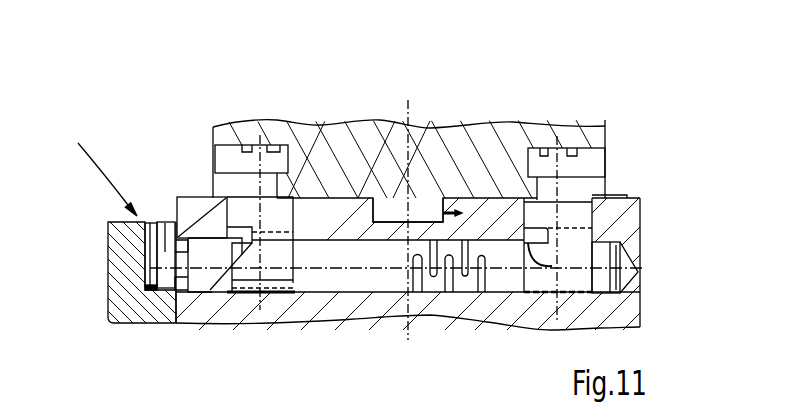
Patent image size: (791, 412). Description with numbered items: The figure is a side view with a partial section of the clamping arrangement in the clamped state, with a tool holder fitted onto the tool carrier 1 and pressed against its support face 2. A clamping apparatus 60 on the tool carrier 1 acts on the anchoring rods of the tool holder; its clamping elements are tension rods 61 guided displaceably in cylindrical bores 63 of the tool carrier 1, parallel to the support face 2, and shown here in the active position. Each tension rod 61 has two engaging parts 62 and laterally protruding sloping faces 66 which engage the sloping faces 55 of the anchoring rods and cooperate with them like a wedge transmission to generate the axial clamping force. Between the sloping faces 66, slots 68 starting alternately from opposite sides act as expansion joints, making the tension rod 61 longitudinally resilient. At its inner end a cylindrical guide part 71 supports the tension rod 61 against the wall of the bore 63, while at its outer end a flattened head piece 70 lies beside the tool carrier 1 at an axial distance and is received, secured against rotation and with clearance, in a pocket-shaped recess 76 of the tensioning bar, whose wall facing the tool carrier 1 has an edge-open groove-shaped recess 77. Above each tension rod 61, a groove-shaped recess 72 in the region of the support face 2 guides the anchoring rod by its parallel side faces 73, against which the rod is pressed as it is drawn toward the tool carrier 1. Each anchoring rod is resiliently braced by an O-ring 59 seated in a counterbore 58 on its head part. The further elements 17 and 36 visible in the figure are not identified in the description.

The tool carrier 1 is at (628, 313).
The support face 2 is at (402, 155).
The channel 17 is at (428, 212).
The marking 36 is at (527, 200).
The sloping faces 55 is at (305, 282).
The counterbore 58 is at (284, 158).
The O-ring 59 is at (245, 147).
The clamping apparatus 60 is at (94, 168).
The tension rods 61 is at (357, 280).
The engaging parts 62 is at (204, 272).
The cylindrical bores 63 is at (620, 262).
The sloping faces 66 is at (222, 284).
The slots 68 is at (472, 292).
The head piece 70 is at (150, 241).
The cylindrical guide part 71 is at (640, 273).
The groove-shaped recesses 72 is at (593, 219).
The side faces 73 is at (218, 215).
The pocket-shaped recesses 76 is at (152, 290).
The groove-shaped recess 77 is at (163, 235).